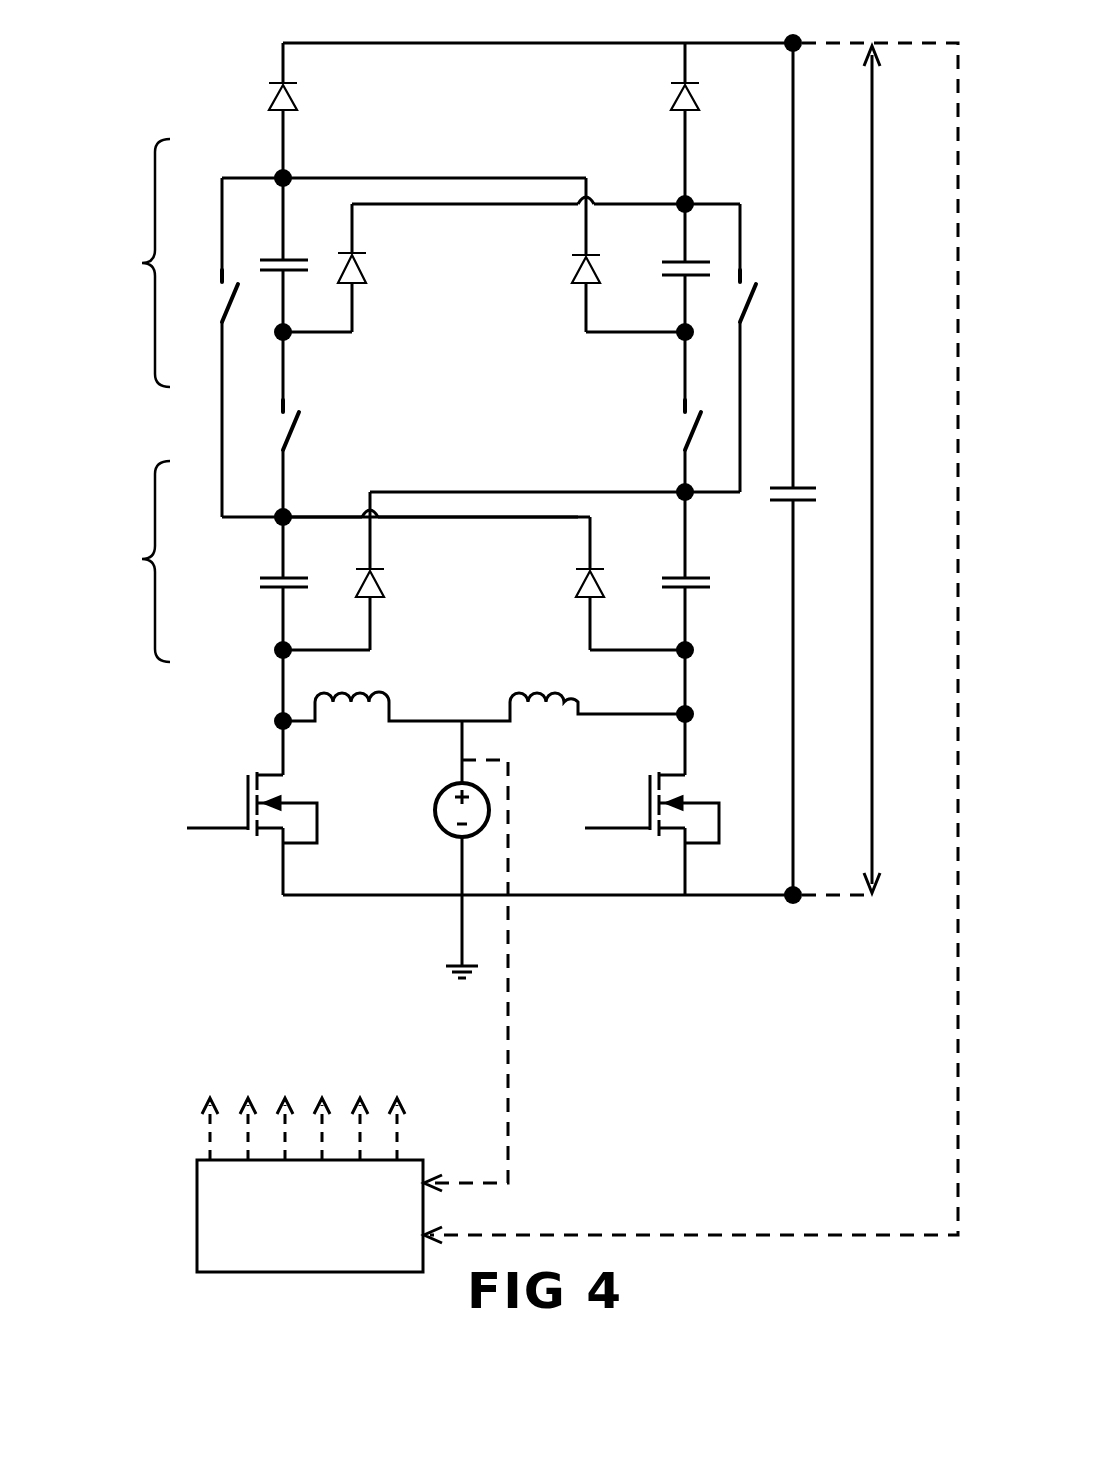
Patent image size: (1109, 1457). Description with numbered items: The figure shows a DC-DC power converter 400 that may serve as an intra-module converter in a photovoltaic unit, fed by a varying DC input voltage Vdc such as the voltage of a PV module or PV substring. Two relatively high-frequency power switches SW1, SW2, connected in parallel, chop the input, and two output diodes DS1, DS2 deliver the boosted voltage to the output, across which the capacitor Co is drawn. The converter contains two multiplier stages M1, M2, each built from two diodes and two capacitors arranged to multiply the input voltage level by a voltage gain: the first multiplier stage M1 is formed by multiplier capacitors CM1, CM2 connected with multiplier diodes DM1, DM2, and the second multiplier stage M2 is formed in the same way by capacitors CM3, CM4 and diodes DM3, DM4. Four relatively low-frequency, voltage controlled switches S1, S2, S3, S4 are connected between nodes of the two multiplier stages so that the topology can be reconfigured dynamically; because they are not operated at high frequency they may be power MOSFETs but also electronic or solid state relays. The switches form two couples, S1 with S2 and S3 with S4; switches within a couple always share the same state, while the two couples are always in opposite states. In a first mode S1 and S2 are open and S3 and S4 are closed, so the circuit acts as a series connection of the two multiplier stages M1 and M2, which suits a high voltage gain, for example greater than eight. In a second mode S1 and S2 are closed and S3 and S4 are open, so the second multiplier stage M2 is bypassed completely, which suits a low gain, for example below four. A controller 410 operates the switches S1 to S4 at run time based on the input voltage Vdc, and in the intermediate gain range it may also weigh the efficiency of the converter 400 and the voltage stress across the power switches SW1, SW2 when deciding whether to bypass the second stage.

The converter 400 is at (127, 1277).
The controller 410 is at (208, 1184).
The output diode DS1 is at (312, 96).
The output diode DS2 is at (709, 96).
The multiplier diode DM1 is at (399, 583).
The multiplier diode DM2 is at (563, 583).
The module diode DM3 is at (375, 284).
The module diode DM4 is at (557, 271).
The multiplier capacitor CM1 is at (255, 585).
The multiplier capacitor CM2 is at (711, 585).
The module capacitor CM3 is at (271, 252).
The module capacitor CM4 is at (669, 255).
The output capacitor Co is at (804, 515).
The switching device S1 is at (205, 301).
The switching device S2 is at (762, 298).
The switching device S3 is at (316, 425).
The switching device S4 is at (669, 425).
The power switch SW1 is at (252, 820).
The power switch SW2 is at (652, 820).
The input voltage Vdc is at (436, 849).
The first multiplier stage M1 is at (122, 561).
The second multiplier stage M2 is at (116, 263).